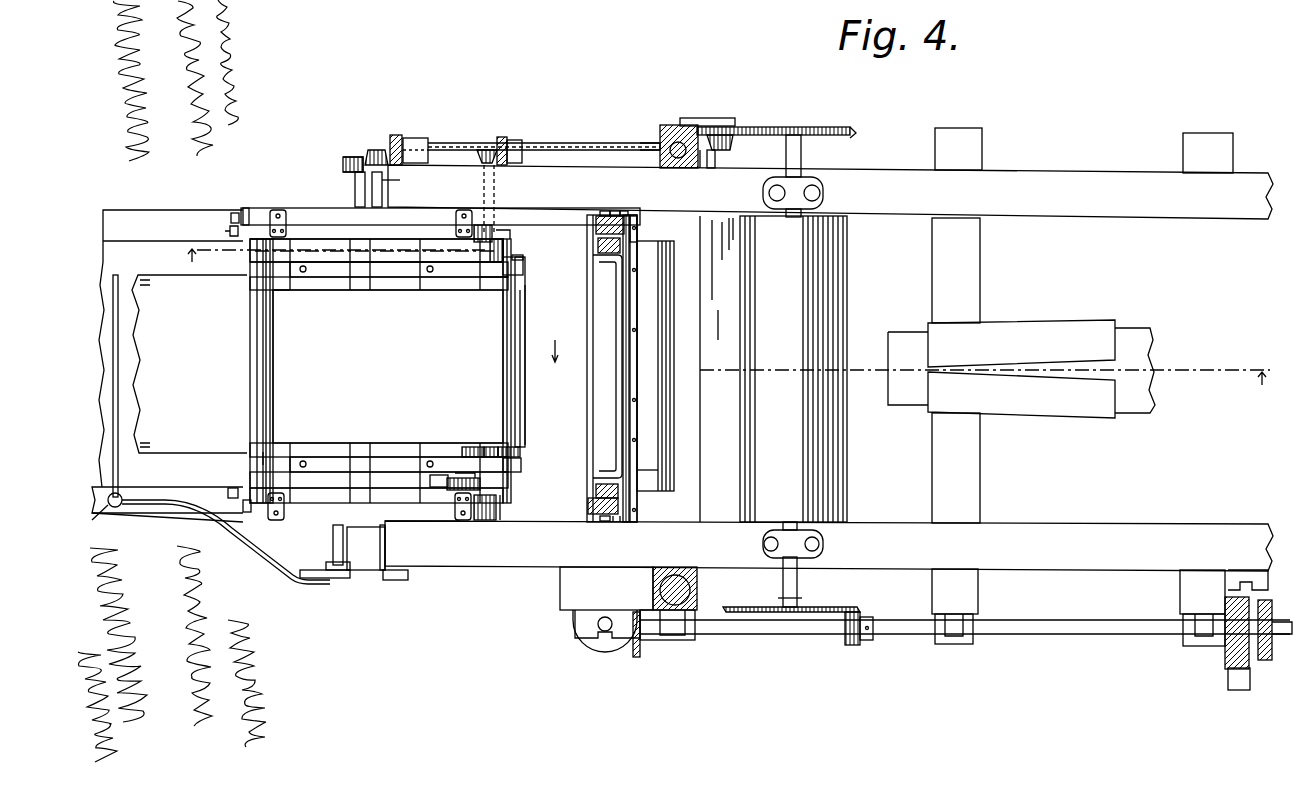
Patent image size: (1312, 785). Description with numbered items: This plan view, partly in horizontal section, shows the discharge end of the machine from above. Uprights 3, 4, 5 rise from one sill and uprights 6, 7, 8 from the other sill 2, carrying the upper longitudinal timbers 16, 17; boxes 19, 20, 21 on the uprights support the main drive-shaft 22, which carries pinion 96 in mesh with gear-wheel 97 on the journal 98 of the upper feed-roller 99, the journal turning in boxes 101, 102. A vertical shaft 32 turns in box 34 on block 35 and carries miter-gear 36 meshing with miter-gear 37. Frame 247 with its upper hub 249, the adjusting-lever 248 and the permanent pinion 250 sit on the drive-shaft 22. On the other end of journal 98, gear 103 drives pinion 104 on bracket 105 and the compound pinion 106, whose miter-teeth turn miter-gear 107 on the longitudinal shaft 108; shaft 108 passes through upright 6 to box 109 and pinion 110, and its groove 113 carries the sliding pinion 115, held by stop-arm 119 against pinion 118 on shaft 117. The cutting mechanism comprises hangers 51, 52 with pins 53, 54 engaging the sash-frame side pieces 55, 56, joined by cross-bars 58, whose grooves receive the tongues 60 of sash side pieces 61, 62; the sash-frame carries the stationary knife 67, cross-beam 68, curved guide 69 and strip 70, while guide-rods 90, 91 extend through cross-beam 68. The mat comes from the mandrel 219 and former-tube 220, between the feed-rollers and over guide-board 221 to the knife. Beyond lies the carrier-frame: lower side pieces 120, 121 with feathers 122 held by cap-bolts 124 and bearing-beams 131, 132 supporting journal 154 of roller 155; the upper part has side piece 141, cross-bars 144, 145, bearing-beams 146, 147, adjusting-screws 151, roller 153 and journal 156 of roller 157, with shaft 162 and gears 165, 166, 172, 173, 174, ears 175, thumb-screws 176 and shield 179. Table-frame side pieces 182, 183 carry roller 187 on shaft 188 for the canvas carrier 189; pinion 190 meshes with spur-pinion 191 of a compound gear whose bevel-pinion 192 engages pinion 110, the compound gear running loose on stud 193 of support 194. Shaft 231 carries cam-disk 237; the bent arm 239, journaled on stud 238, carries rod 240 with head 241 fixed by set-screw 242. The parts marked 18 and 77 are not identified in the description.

The sill 2 is at (725, 315).
The upright 3 is at (697, 580).
The upright 4 is at (955, 591).
The upright 5 is at (1202, 592).
The upright 6 is at (666, 125).
The upright 7 is at (954, 128).
The upright 8 is at (1208, 153).
The upper longitudinal timber 16 is at (829, 546).
The upper longitudinal timber 17 is at (830, 192).
The upright post 18 is at (978, 275).
The upper box 19 is at (680, 635).
The upper box 20 is at (958, 625).
The upper box 21 is at (1195, 625).
The main drive-shaft 22 is at (1074, 620).
The vertical shaft 32 is at (606, 616).
The box 34 is at (592, 612).
The block 35 is at (560, 594).
The miter-gear 36 is at (598, 655).
The miter-gear 37 is at (640, 650).
The hanger 51 is at (612, 522).
The hanger 52 is at (614, 212).
The pin 53 is at (600, 520).
The pin 54 is at (600, 212).
The side piece of sash-frame 55 is at (622, 522).
The side piece of sash-frame 56 is at (625, 212).
The cross-bar 58 is at (587, 431).
The vertical tongue 60 is at (597, 228).
The side piece of sash 61 is at (596, 489).
The side piece of sash 62 is at (598, 246).
The stationary straight knife-blade 67 is at (655, 366).
The cross-beam 68 is at (640, 232).
The downward-curved guide 69 is at (647, 460).
The strip 70 is at (612, 330).
The plate 77 is at (388, 366).
The guide-rod 90 is at (640, 514).
The guide-rod 91 is at (640, 225).
The pinion 96 is at (862, 617).
The gear-wheel 97 is at (845, 607).
The journal 98 is at (786, 150).
The upper feed-roller 99 is at (847, 492).
The box 101 is at (824, 552).
The box 102 is at (815, 185).
The gear 103 is at (805, 127).
The pinion 104 is at (730, 135).
The bracket 105 is at (710, 118).
The compound pinion 106 is at (715, 158).
The miter-gear 107 is at (704, 168).
The longitudinal shaft 108 is at (645, 147).
The box 109 is at (433, 134).
The pinion 110 is at (398, 135).
The longitudinal groove 113 is at (595, 136).
The pinion 115 is at (503, 137).
The shaft 117 is at (498, 240).
The pinion 118 is at (482, 150).
The stop-arm 119 is at (522, 150).
The side piece 120 is at (425, 530).
The side piece 121 is at (320, 208).
The feather 122 is at (300, 186).
The cap-bolt 124 is at (233, 213).
The bearing-beam 131 is at (525, 268).
The bearing-beam 132 is at (521, 466).
The side piece 141 is at (428, 239).
The cross-bar 144 is at (430, 277).
The cross-bar 145 is at (305, 286).
The bearing-beam 146 is at (405, 537).
The bearing-beam 147 is at (396, 277).
The adjusting-screws 151 is at (228, 231).
The upper transverse roller 153 is at (250, 283).
The journal 154 is at (522, 252).
The transverse roller 155 is at (526, 290).
The journal 156 is at (480, 484).
The upper transverse roller 157 is at (495, 290).
The transverse shaft 162 is at (500, 300).
The gear 165 is at (436, 487).
The gear 166 is at (500, 500).
The gear 172 is at (520, 452).
The gear 173 is at (465, 447).
The gear 174 is at (490, 447).
The lateral ear 175 is at (246, 208).
The thumb-screw 176 is at (278, 210).
The sheet-metal shield 179 is at (555, 362).
The side piece of table-frame 182 is at (165, 515).
The side piece of table-frame 183 is at (175, 220).
The roller 187 is at (368, 503).
The shaft 188 is at (355, 185).
The canvas endless carrier 189 is at (150, 390).
The pinion 190 is at (352, 156).
The spur-pinion 191 is at (406, 176).
The bevel-pinion 192 is at (348, 157).
The stud 193 is at (378, 150).
The support 194 is at (382, 196).
The mandrel 219 is at (1148, 352).
The former-tube 220 is at (1092, 321).
The guide-board 221 is at (718, 369).
The transverse shaft 231 is at (333, 552).
The cam-disk 237 is at (304, 580).
The stud 238 is at (394, 582).
The bent arm 239 is at (258, 560).
The transverse rod 240 is at (120, 348).
The head 241 is at (104, 523).
The set-screw 242 is at (122, 495).
The frame 247 is at (1260, 560).
The adjusting-lever 248 is at (1236, 690).
The upper hub 249 is at (1232, 645).
The permanent pinion 250 is at (1278, 598).